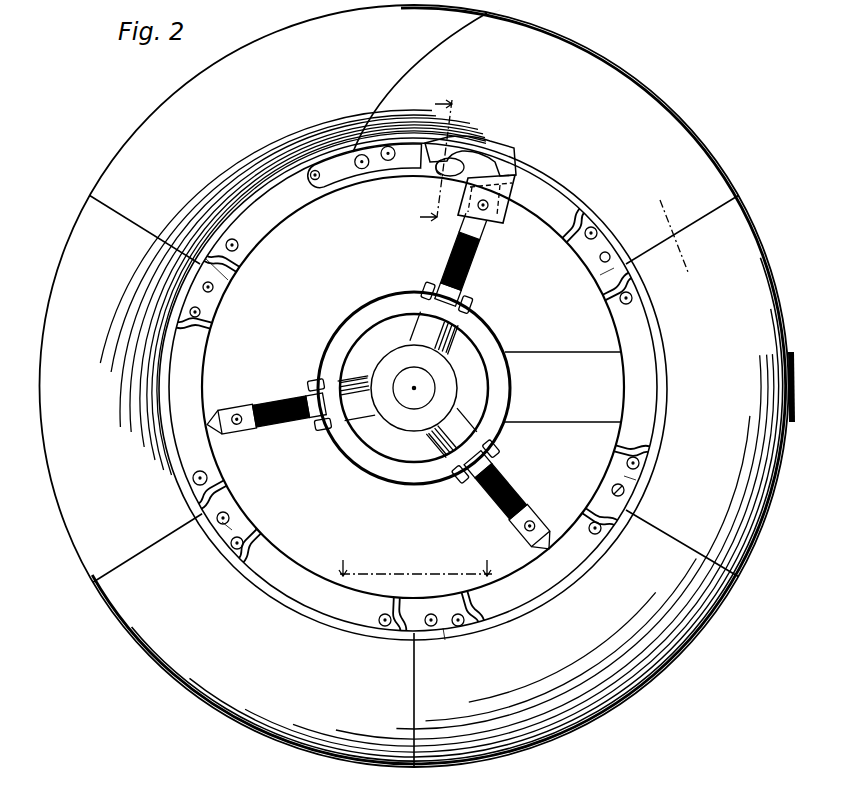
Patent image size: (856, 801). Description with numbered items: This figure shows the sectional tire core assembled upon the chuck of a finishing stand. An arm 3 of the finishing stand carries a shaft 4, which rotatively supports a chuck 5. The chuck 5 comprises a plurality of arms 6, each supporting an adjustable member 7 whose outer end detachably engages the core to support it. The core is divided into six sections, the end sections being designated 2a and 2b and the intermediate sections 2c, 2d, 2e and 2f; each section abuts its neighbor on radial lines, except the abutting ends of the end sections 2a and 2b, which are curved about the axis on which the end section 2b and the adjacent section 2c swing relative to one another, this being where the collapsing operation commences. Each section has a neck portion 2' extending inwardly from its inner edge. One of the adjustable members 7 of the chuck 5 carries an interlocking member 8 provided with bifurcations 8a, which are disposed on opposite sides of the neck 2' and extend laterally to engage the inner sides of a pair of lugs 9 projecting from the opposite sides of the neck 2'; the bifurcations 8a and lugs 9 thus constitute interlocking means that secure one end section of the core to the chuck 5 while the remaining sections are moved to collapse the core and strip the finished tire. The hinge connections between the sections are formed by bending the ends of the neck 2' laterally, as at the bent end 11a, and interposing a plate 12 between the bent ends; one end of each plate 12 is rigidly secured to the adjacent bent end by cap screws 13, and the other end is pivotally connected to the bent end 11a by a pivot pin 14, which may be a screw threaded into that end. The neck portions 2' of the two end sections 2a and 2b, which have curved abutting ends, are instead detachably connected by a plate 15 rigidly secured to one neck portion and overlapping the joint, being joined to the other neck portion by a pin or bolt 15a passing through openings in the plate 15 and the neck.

The end section 2a is at (169, 110).
The end section 2b is at (634, 67).
The intermediate section 2c is at (740, 205).
The intermediate section 2d is at (678, 652).
The intermediate section 2e is at (277, 731).
The intermediate section 2f is at (88, 555).
The neck portion 2' is at (413, 387).
The arm 3 is at (560, 360).
The shaft 4 is at (408, 403).
The chuck 5 is at (414, 388).
The arms 6 is at (460, 414).
The adjustable member 7 is at (520, 494).
The interlocking member 8 is at (512, 190).
The bifurcations 8a is at (466, 150).
The lugs 9 is at (440, 175).
The bent end 11a is at (404, 607).
The plate 12 is at (440, 655).
The cap screws 13 is at (452, 598).
The pivot pin 14 is at (222, 462).
The plate 15 is at (330, 177).
The pin or bolt 15a is at (315, 179).